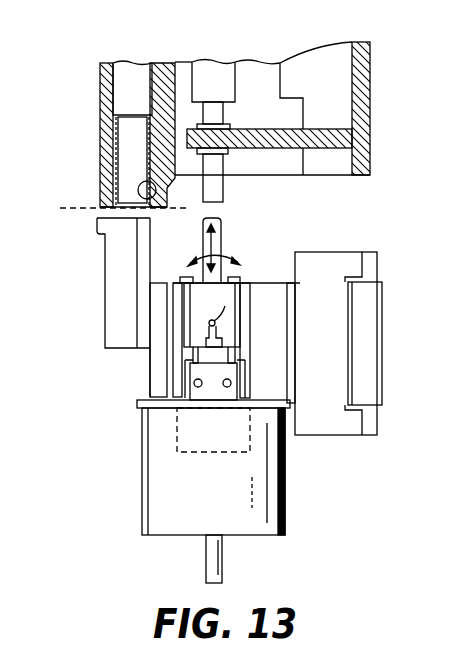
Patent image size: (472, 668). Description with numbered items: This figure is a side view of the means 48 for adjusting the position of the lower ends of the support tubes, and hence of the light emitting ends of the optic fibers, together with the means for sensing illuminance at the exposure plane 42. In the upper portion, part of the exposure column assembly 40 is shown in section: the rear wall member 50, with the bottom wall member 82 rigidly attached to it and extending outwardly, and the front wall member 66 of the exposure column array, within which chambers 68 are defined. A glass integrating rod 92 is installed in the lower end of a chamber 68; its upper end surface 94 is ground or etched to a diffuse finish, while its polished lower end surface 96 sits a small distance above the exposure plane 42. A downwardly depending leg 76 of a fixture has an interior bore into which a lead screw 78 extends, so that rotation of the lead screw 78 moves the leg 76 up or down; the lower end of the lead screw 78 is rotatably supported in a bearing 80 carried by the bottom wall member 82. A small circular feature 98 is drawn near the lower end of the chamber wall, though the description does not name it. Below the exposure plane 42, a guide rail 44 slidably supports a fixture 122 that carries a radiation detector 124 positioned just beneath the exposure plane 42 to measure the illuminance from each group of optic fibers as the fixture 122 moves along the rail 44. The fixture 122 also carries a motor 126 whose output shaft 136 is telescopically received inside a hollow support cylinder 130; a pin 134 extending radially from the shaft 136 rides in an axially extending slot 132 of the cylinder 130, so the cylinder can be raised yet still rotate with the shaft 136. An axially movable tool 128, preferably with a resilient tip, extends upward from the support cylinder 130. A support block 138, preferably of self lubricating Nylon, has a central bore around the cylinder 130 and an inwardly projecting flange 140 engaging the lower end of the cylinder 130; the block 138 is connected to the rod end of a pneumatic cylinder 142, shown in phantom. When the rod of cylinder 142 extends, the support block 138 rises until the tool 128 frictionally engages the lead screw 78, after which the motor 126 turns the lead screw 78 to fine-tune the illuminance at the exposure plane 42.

The exposure column assembly 40 is at (82, 143).
The exposure plane 42 is at (78, 214).
The guide rail 44 is at (372, 252).
The means for adjusting the position of lower end of support tube 48 is at (140, 367).
The rear wall member 50 is at (368, 102).
The front wall member 66 is at (100, 130).
The chambers 68 is at (125, 92).
The leg 76 is at (220, 67).
The lead screw 78 is at (220, 187).
The bearing 80 is at (227, 127).
The bottom wall member 82 is at (333, 148).
The glass integrating rod 92 is at (128, 185).
The upper end surface 94 is at (138, 115).
The lower end surface 96 is at (128, 232).
The port 98 is at (152, 203).
The fixture 122 is at (342, 340).
The radiation detector 124 is at (115, 280).
The motor 126 is at (234, 528).
The tool 128 is at (222, 232).
The support cylinder 130 is at (248, 288).
The slot 132 is at (212, 330).
The pin 134 is at (240, 293).
The output shaft 136 is at (222, 398).
The support block 138 is at (252, 378).
The flange 140 is at (242, 352).
The pneumatic cylinder 142 is at (212, 452).